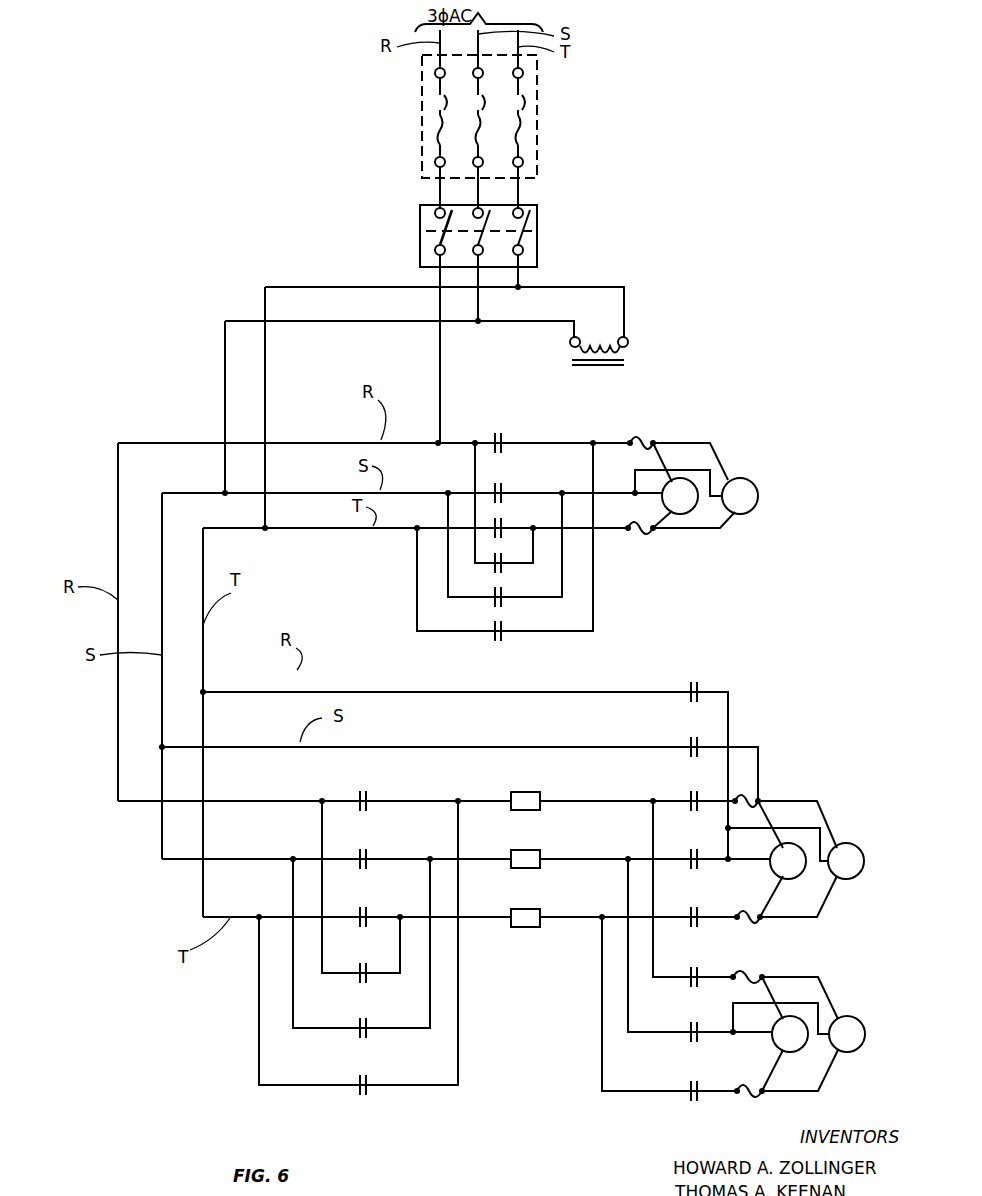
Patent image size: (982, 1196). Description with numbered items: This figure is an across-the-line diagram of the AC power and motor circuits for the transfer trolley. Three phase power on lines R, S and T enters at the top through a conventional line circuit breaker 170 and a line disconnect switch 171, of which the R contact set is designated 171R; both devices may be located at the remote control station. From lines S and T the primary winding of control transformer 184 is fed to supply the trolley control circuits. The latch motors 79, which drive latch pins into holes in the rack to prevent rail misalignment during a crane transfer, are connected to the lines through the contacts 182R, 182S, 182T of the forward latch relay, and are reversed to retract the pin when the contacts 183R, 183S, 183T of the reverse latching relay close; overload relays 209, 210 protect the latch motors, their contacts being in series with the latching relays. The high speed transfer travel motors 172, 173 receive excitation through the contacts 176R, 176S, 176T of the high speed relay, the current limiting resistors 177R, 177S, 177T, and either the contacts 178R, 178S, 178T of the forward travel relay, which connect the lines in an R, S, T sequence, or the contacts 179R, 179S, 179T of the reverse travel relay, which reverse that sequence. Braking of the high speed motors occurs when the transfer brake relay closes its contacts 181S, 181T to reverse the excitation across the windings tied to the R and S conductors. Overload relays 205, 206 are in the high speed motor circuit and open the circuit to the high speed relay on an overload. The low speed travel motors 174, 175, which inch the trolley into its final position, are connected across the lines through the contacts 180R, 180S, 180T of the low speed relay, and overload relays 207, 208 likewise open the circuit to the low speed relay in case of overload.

The line circuit breaker 170 is at (540, 134).
The line disconnect switch 171 is at (540, 247).
The R contact set of switch 171 171R is at (437, 232).
The control transformer 184 is at (612, 368).
The contact of forward latch relay 182 182R is at (503, 433).
The contact of forward latch relay 182 182S is at (505, 490).
The contact of forward latch relay 182 182T is at (492, 533).
The contact of reverse latching relay 183 183R is at (503, 566).
The contact of reverse latching relay 183 183S is at (505, 602).
The contact of reverse latching relay 183 183T is at (492, 633).
The overload relay 209 is at (645, 440).
The overload relay 210 is at (645, 532).
The latch motor 79 is at (705, 478).
The contact of transfer brake relay 181 181T is at (698, 688).
The contact of transfer brake relay 181 181S is at (698, 743).
The contact of forward travel relay 178 178R is at (368, 797).
The contact of forward travel relay 178 178S is at (368, 855).
The contact of forward travel relay 178 178T is at (395, 899).
The contact of reverse travel relay 179 179R is at (368, 977).
The contact of reverse travel relay 179 179S is at (358, 1032).
The contact of reverse travel relay 179 179T is at (358, 1090).
The current limiting resistor 177R is at (543, 810).
The current limiting resistor 177S is at (541, 866).
The current limiting resistor 177T is at (527, 930).
The contact of high speed relay 176 176R is at (690, 797).
The contact of high speed relay 176 176S is at (710, 836).
The contact of high speed relay 176 176T is at (698, 913).
The overload relay 205 is at (748, 800).
The overload relay 206 is at (752, 922).
The high speed transfer travel motor 173 is at (850, 845).
The high speed transfer travel motor 172 is at (805, 878).
The contact of low speed relay 180 180R is at (715, 958).
The contact of low speed relay 180 180S is at (697, 1027).
The contact of low speed relay 180 180T is at (690, 1096).
The overload relay 207 is at (760, 975).
The overload relay 208 is at (760, 1094).
The low speed travel motor 174 is at (808, 1048).
The low speed travel motor 175 is at (853, 1018).